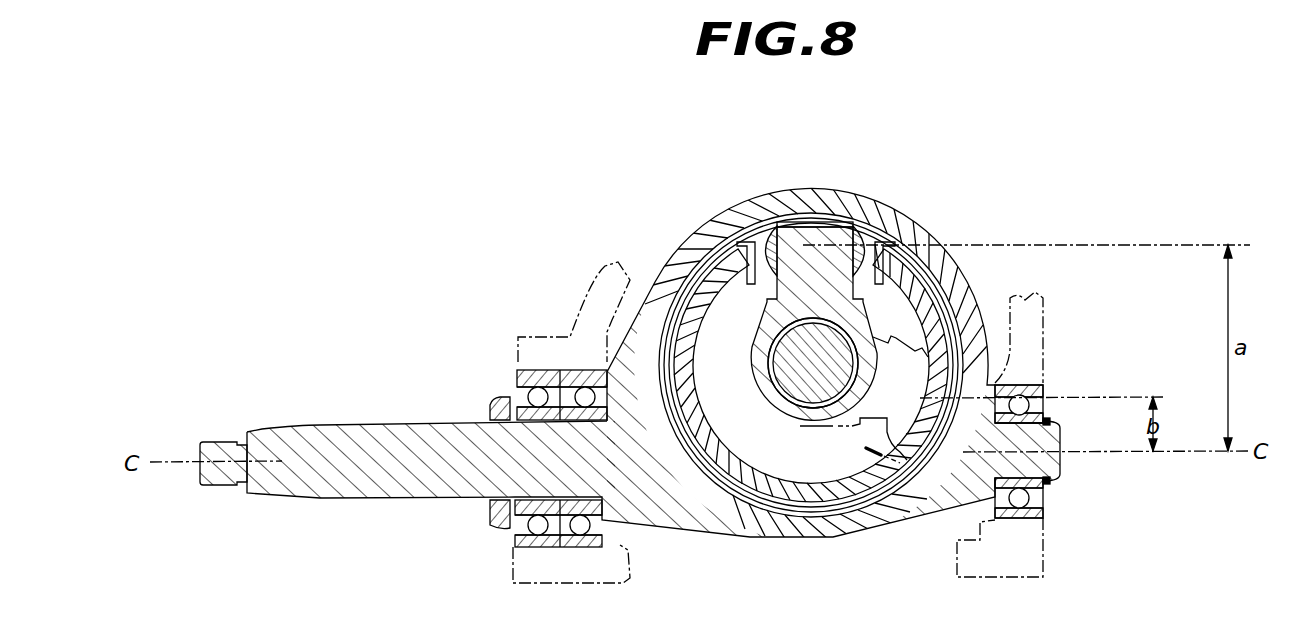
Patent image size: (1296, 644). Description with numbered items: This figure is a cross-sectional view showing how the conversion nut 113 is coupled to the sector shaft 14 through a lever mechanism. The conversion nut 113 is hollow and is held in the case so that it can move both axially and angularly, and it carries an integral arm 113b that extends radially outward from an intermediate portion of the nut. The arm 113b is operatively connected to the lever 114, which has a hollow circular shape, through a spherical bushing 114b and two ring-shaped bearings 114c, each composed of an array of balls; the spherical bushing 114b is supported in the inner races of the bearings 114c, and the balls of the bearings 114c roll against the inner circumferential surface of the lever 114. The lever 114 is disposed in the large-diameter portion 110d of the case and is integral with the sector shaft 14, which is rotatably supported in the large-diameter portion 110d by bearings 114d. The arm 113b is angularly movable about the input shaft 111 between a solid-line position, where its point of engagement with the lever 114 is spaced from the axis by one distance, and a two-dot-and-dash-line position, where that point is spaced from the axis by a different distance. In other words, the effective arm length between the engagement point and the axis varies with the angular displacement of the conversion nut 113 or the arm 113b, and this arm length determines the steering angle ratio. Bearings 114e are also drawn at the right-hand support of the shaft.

The sector shaft 14 is at (362, 427).
The large-diameter portion 110d is at (518, 337).
The bearings 114d is at (505, 392).
The conversion nut 113 is at (758, 333).
The arm 113b is at (815, 259).
The spherical bushing 114b is at (862, 243).
The lever 114 is at (921, 230).
The ring-shaped bearings 114c is at (937, 248).
The bearing 114e is at (1045, 388).
The input shaft 111 is at (805, 392).